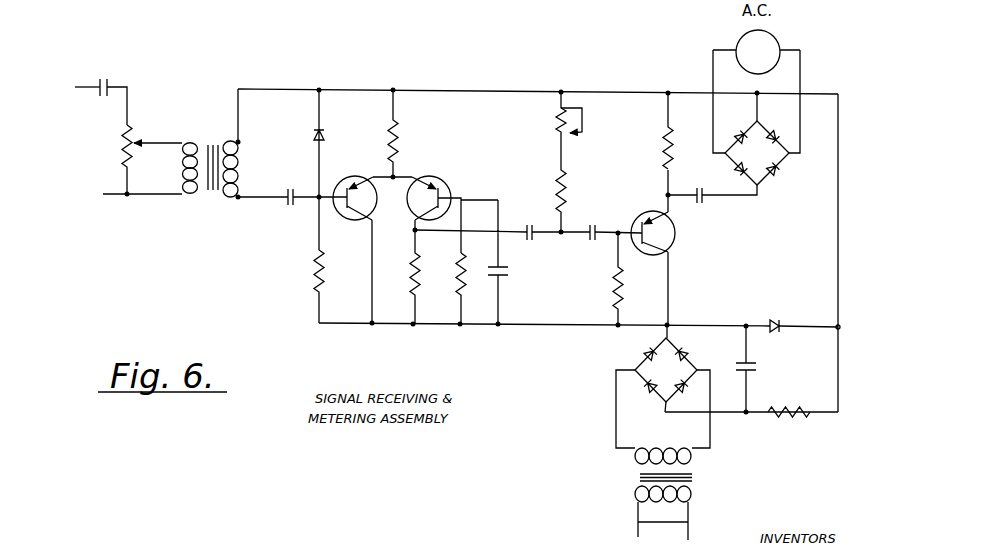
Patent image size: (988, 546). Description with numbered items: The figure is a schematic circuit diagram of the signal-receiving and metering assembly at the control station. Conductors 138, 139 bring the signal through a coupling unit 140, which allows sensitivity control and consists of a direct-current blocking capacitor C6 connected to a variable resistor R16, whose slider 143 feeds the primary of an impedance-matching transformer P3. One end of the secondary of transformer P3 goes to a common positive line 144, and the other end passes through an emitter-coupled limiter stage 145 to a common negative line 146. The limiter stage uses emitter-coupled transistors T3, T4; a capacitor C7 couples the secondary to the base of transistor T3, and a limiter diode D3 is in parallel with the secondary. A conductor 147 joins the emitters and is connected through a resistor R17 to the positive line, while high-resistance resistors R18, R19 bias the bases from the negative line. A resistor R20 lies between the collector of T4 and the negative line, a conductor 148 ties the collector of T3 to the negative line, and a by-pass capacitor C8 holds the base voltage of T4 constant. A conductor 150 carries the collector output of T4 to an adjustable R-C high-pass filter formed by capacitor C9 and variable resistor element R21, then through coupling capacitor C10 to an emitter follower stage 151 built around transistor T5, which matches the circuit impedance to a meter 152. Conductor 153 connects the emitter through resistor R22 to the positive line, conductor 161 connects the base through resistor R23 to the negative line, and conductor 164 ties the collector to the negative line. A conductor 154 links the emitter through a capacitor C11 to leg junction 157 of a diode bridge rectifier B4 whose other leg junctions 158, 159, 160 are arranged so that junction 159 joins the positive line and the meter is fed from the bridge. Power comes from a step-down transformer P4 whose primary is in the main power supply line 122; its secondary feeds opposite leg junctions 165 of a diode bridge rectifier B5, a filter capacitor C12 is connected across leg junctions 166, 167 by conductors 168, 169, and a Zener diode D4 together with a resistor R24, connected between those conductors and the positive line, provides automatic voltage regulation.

The conductor 138 is at (75, 87).
The direct-current blocking capacitor C6 is at (108, 80).
The variable resistor R16 is at (121, 158).
The slider 143 is at (143, 140).
The conductor 139 is at (117, 196).
The coupling unit 140 is at (171, 200).
The impedance-matching transformer P3 is at (212, 140).
The limiter diode D3 is at (314, 132).
The high-resistance resistor R18 is at (315, 274).
The capacitor C7 is at (287, 191).
The emitter-coupled limiter stage 145 is at (312, 224).
The transistor T3 is at (370, 176).
The conductor 148 is at (371, 290).
The conductor 147 is at (400, 178).
The transistor T4 is at (435, 174).
The resistor R17 is at (402, 139).
The resistor R20 is at (408, 278).
The high-resistance resistor R19 is at (464, 273).
The by-pass capacitor C8 is at (505, 278).
The common negative line 146 is at (398, 328).
The common positive line 144 is at (468, 87).
The variable resistor element R21 is at (553, 185).
The capacitor C9 is at (525, 224).
The coupling capacitor C10 is at (600, 227).
The conductor 150 is at (578, 236).
The resistor R23 is at (612, 280).
The conductor 161 is at (622, 257).
The transistor T5 is at (660, 213).
The emitter follower stage 151 is at (680, 250).
The conductor 164 is at (677, 307).
The resistor R22 is at (667, 157).
The conductor 153 is at (667, 110).
The capacitor C11 is at (710, 200).
The conductor 154 is at (742, 200).
The leg junction 157 is at (762, 190).
The diode bridge rectifier B4 is at (789, 169).
The leg junction 160 is at (723, 147).
The leg junction 159 is at (765, 122).
The leg junction 158 is at (787, 160).
The meter 152 is at (781, 44).
The Zener diode D4 is at (783, 323).
The conductor 168 is at (730, 325).
The filter capacitor C12 is at (756, 369).
The conductor 169 is at (733, 413).
The resistor R24 is at (790, 417).
The diode bridge rectifier B5 is at (636, 357).
The leg junction 166 is at (663, 340).
The leg junctions 165 is at (636, 373).
The leg junction 167 is at (665, 405).
The step-down transformer P4 is at (699, 478).
The main power supply line 122 is at (638, 522).